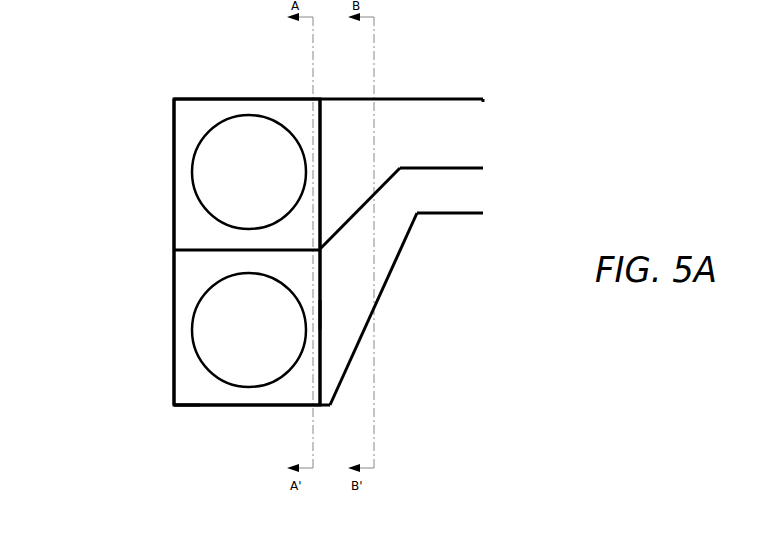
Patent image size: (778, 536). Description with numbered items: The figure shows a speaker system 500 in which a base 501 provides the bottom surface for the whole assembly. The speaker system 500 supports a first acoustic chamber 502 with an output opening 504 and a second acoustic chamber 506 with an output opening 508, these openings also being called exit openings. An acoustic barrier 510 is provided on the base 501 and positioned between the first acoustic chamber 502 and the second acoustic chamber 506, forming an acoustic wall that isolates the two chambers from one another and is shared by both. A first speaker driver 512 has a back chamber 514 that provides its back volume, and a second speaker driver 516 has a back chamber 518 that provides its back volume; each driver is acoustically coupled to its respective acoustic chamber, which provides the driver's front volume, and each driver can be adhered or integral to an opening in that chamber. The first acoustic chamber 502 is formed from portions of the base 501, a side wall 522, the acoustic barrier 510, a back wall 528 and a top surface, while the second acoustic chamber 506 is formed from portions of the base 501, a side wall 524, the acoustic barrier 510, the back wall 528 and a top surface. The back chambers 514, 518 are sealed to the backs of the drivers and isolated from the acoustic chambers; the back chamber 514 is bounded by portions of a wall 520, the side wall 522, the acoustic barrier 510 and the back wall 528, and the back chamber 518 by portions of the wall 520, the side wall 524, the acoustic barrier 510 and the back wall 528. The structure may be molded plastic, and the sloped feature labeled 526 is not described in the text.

The speaker system 500 is at (179, 73).
The base 501 is at (188, 406).
The first acoustic chamber 502 is at (364, 173).
The output opening 504 is at (485, 137).
The second acoustic chamber 506 is at (364, 286).
The output opening 508 is at (485, 192).
The acoustic barrier 510 is at (188, 253).
The first speaker driver 512 is at (191, 196).
The back chamber 514 is at (298, 122).
The second speaker driver 516 is at (190, 332).
The back chamber 518 is at (294, 388).
The wall 520 is at (321, 128).
The side wall 522 is at (397, 90).
The side wall 524 is at (244, 413).
The sloped sidewall 526 is at (385, 288).
The back wall 528 is at (173, 148).